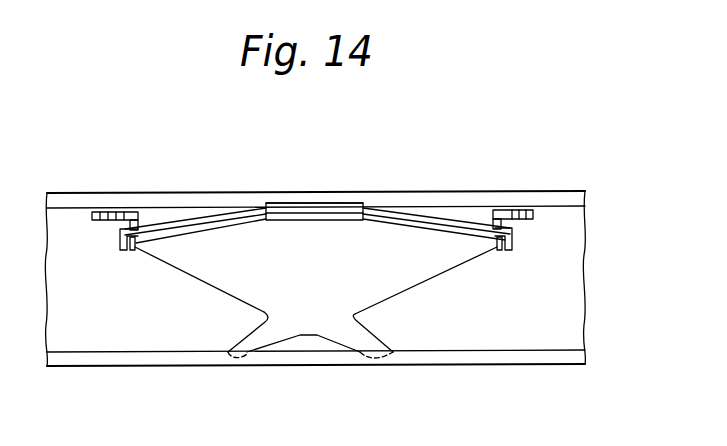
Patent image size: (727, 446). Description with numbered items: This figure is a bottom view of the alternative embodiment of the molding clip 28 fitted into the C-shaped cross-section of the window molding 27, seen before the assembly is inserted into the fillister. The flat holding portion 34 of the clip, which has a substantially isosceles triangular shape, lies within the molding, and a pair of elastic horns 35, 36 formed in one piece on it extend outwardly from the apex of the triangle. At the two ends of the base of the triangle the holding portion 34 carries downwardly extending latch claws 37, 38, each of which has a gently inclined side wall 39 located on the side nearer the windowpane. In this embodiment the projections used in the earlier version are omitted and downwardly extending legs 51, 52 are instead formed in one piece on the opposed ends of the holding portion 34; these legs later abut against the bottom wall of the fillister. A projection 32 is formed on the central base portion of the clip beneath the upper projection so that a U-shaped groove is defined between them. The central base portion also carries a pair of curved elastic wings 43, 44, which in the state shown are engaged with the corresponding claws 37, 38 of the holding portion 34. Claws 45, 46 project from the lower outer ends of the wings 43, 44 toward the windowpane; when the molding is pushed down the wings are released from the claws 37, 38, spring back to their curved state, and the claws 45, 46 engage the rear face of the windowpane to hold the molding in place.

The window molding 27 is at (585, 282).
The molding clip 28 is at (310, 324).
The projection 32 is at (292, 203).
The holding portion 34 is at (412, 275).
The elastic horn 35 is at (360, 342).
The elastic horn 36 is at (243, 350).
The latch claw 37 is at (497, 252).
The latch claw 38 is at (131, 250).
The gently inclined side wall 39 is at (326, 220).
The elastic wing 43 is at (435, 222).
The elastic wing 44 is at (193, 224).
The claw 45 is at (513, 241).
The claw 46 is at (119, 240).
The leg 51 is at (519, 211).
The leg 52 is at (113, 212).